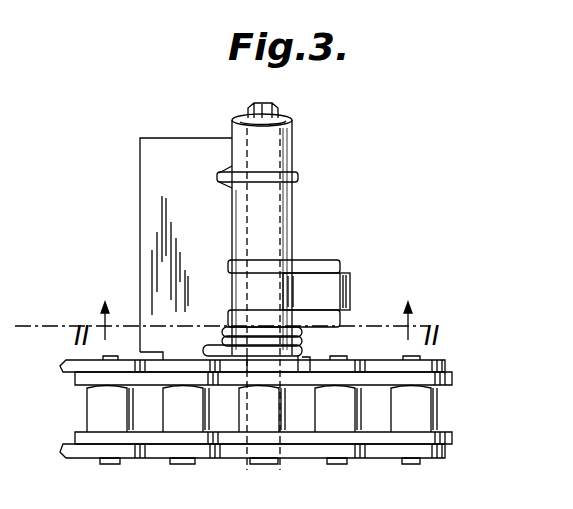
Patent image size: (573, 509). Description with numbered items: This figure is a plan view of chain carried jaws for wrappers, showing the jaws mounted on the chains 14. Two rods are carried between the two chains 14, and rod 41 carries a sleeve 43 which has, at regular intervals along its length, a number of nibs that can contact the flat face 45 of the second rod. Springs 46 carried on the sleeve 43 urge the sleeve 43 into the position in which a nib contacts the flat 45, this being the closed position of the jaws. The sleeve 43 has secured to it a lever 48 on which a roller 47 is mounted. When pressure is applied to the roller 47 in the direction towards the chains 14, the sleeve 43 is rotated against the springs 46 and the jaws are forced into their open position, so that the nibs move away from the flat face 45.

The chains 14 is at (58, 347).
The rod 41 is at (385, 107).
The sleeve 43 is at (362, 131).
The flat face 45 is at (214, 113).
The springs 46 is at (125, 268).
The roller 47 is at (418, 265).
The lever 48 is at (366, 240).